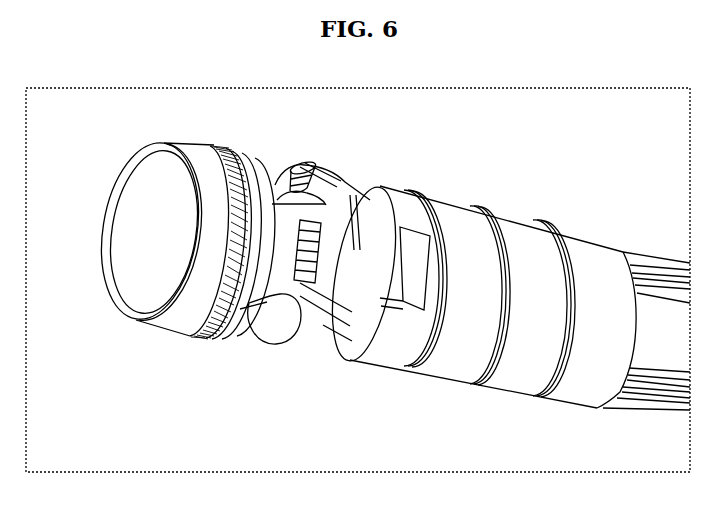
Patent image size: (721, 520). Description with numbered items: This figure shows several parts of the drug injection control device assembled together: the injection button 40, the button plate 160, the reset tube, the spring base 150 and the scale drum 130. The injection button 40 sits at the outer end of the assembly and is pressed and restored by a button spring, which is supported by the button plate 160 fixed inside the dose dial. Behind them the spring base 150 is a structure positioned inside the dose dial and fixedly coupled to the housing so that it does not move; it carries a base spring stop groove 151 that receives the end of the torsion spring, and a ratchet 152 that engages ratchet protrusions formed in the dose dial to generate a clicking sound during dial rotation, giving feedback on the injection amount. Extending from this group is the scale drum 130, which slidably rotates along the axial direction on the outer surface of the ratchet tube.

The injection button 40 is at (118, 210).
The scale drum 130 is at (512, 212).
The spring base 150 is at (272, 348).
The base spring stop groove 151 is at (285, 178).
The ratchet 152 is at (297, 168).
The button plate 160 is at (235, 326).